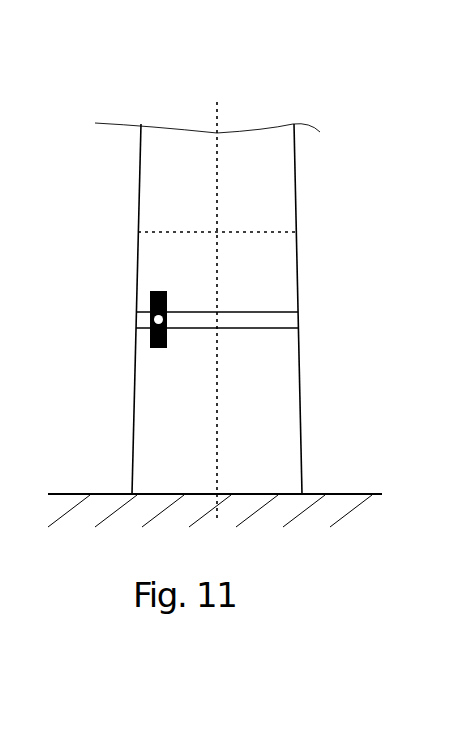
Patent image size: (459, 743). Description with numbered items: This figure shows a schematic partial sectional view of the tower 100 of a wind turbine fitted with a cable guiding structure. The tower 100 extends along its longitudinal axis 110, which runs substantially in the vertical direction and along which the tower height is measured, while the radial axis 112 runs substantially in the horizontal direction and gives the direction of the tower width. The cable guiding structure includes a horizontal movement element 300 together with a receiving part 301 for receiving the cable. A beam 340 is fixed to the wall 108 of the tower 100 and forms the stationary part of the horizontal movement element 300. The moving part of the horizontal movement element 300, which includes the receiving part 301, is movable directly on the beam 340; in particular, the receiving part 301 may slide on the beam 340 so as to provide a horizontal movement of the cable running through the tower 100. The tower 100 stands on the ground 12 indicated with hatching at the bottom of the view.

The tower 100 is at (138, 78).
The wall 108 is at (302, 440).
The longitudinal axis 110 is at (218, 113).
The radial axis 112 is at (237, 231).
The horizontal movement element 300 is at (115, 305).
The receiving part 301 is at (160, 291).
The beam 340 is at (277, 312).
The ground / foundation 12 is at (394, 534).